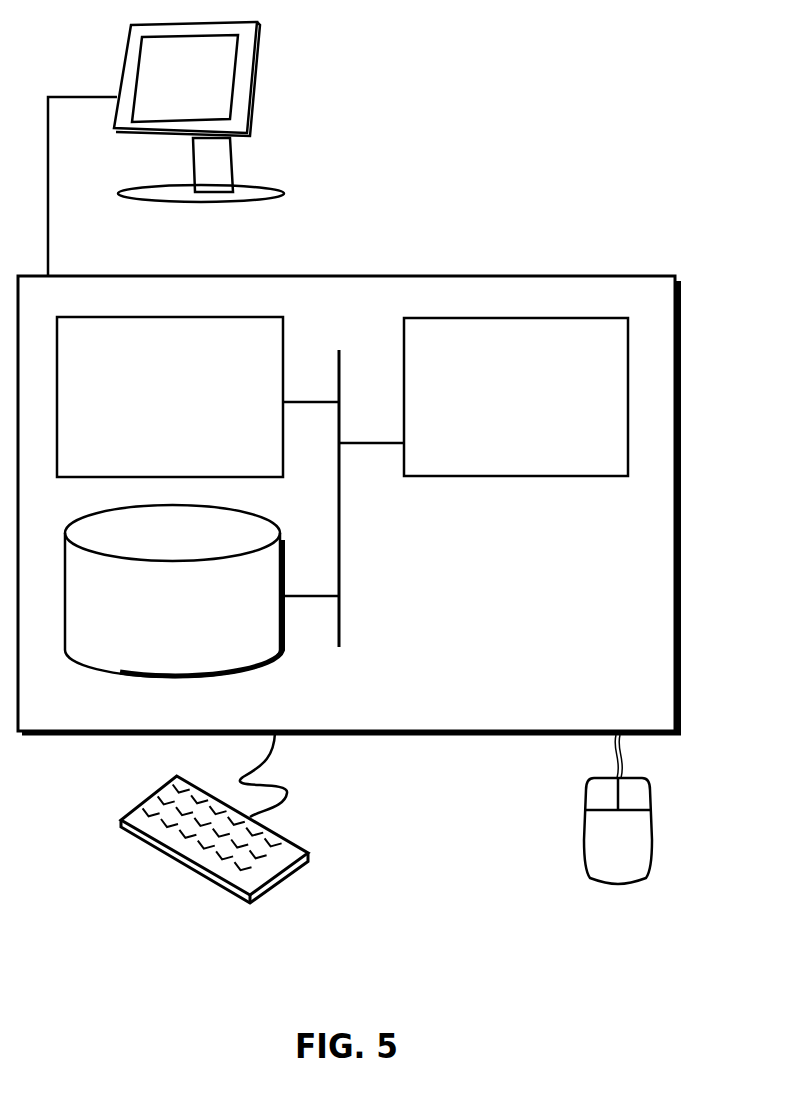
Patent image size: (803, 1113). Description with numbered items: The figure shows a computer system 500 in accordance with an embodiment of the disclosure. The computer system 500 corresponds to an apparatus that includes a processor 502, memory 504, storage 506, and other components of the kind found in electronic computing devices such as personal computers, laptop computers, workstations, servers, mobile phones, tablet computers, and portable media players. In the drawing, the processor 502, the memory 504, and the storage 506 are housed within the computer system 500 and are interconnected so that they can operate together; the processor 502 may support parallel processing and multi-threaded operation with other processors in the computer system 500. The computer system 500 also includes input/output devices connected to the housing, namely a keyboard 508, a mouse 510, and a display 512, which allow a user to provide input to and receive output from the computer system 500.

The computer system 500 is at (393, 255).
The processor 502 is at (541, 409).
The memory 504 is at (191, 409).
The storage 506 is at (197, 620).
The keyboard 508 is at (140, 842).
The mouse 510 is at (638, 852).
The display 512 is at (199, 126).